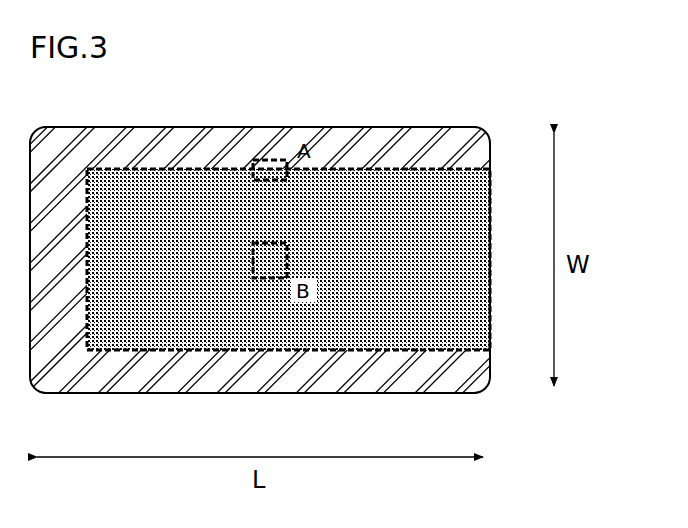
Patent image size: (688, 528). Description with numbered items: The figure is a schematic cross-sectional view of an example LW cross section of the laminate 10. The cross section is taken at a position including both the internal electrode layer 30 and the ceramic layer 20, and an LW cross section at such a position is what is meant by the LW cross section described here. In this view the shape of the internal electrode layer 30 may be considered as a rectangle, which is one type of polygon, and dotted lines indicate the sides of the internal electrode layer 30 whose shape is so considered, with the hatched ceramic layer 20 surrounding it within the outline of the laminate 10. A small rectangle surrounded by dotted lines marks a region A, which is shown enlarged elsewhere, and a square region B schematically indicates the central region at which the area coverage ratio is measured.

The laminate 10 is at (520, 131).
The ceramic layer 20 is at (165, 379).
The internal electrode layer 30 is at (343, 338).